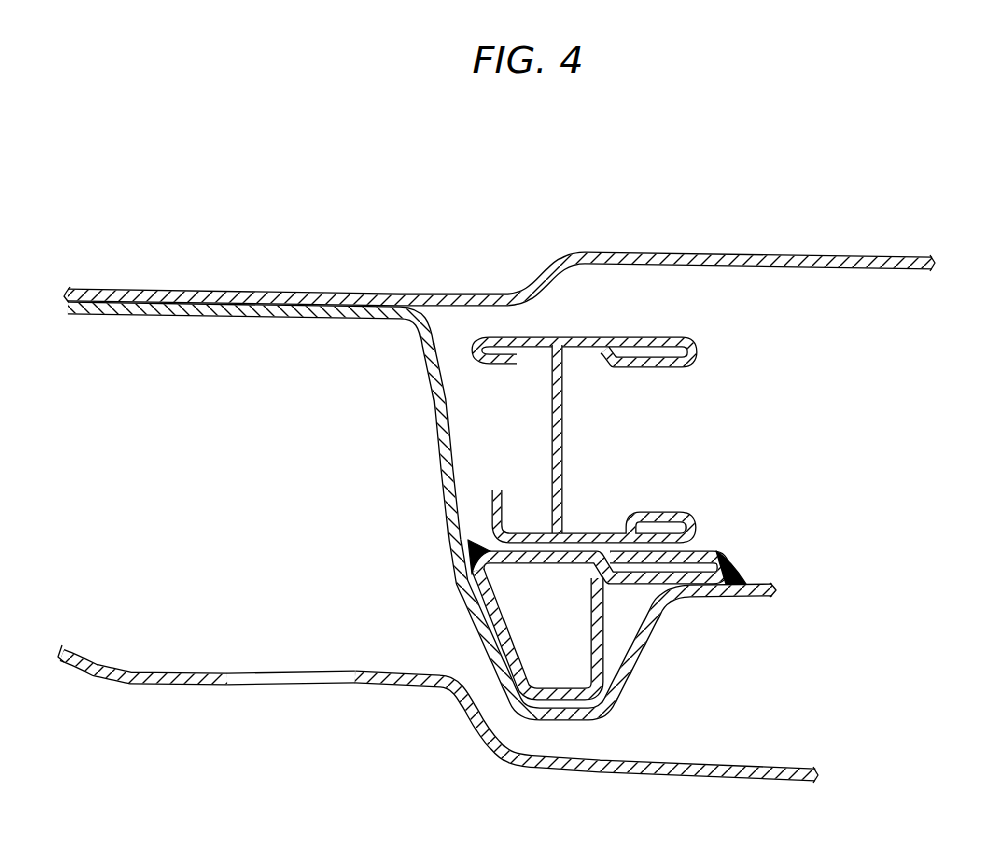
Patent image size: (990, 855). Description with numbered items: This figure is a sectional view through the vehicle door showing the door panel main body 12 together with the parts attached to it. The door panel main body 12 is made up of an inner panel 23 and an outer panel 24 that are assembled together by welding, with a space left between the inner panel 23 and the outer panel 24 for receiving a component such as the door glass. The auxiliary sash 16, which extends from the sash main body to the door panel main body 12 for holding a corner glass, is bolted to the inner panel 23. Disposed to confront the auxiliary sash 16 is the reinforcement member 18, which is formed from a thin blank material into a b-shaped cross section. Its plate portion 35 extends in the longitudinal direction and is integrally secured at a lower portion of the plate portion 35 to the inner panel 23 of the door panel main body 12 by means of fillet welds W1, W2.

The door panel main body 12 is at (363, 237).
The outer panel 24 is at (640, 250).
The auxiliary sash 16 is at (700, 350).
The plate portion 35 is at (493, 545).
The reinforcement member 18 is at (616, 632).
The inner panel 23 is at (745, 598).
The fillet weld W1 is at (468, 541).
The fillet weld W2 is at (735, 549).